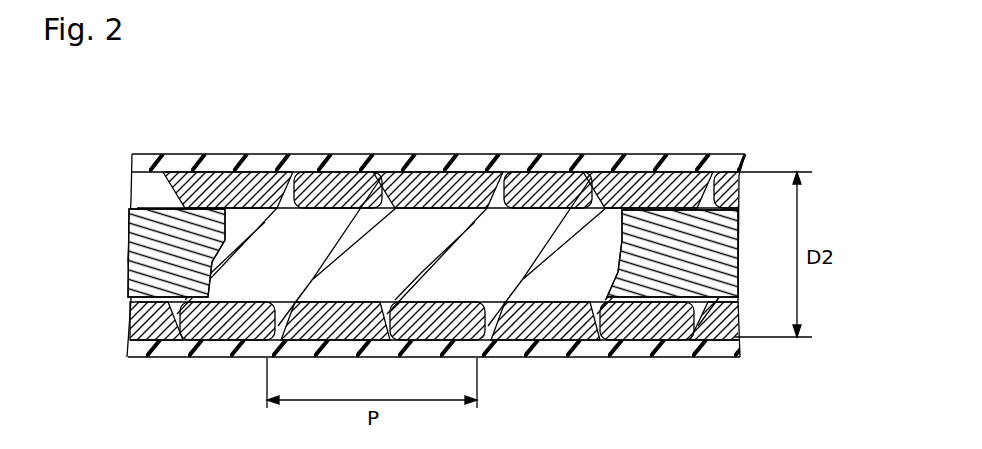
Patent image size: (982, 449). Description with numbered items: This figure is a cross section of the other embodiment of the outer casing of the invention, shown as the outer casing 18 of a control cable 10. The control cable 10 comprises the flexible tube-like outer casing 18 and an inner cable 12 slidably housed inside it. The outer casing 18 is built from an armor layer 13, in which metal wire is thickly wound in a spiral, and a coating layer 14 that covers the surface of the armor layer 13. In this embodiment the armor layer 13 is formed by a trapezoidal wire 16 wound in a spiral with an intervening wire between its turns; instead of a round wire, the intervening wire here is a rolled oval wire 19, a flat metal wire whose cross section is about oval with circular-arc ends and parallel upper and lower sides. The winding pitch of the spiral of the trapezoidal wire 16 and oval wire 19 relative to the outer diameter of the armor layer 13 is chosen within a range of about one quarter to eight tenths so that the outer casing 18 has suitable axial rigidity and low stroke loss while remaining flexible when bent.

The control cable 10 is at (627, 140).
The inner cable 12 is at (720, 245).
The armor layer 13 is at (593, 100).
The coating layer 14 is at (241, 168).
The trapezoidal wire 16 is at (437, 170).
The outer casing 18 is at (705, 153).
The oval wire 19 is at (546, 170).